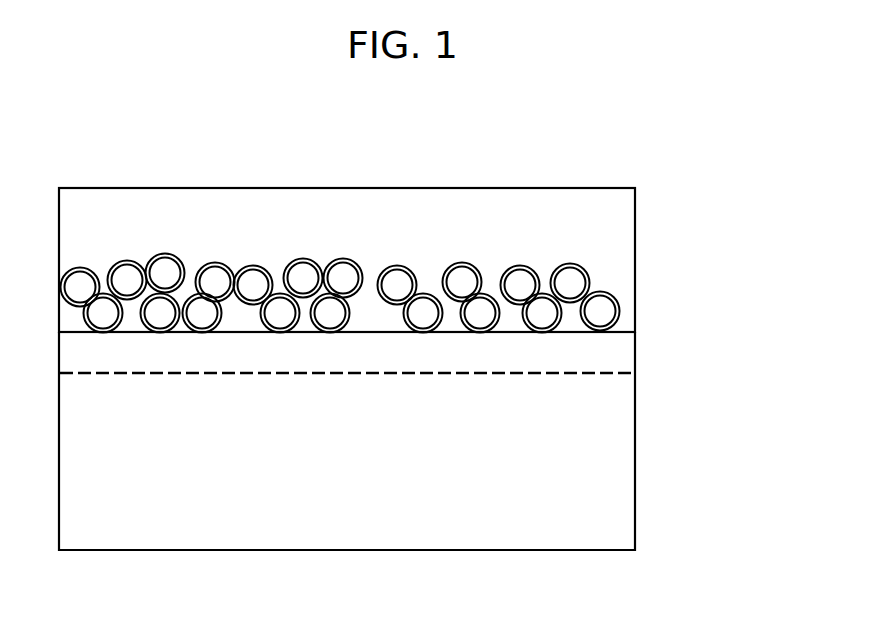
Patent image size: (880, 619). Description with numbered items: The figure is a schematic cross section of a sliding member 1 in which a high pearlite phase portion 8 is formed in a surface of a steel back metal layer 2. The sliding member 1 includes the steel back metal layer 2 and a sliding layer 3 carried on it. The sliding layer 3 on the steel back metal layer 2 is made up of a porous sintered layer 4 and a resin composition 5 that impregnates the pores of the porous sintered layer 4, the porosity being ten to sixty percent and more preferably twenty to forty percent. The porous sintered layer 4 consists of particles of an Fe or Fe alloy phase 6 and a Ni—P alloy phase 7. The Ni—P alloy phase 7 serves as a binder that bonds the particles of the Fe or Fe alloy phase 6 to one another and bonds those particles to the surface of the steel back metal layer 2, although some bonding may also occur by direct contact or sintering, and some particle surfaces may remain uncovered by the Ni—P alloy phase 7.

The sliding member 1 is at (593, 160).
The steel back metal layer 2 is at (637, 455).
The sliding layer 3 is at (637, 275).
The porous sintered layer 4 is at (590, 268).
The resin composition 5 is at (452, 218).
The Fe or Fe alloy phase 6 is at (301, 278).
The Ni—P alloy phase 7 is at (312, 258).
The high pearlite phase portion 8 is at (598, 360).